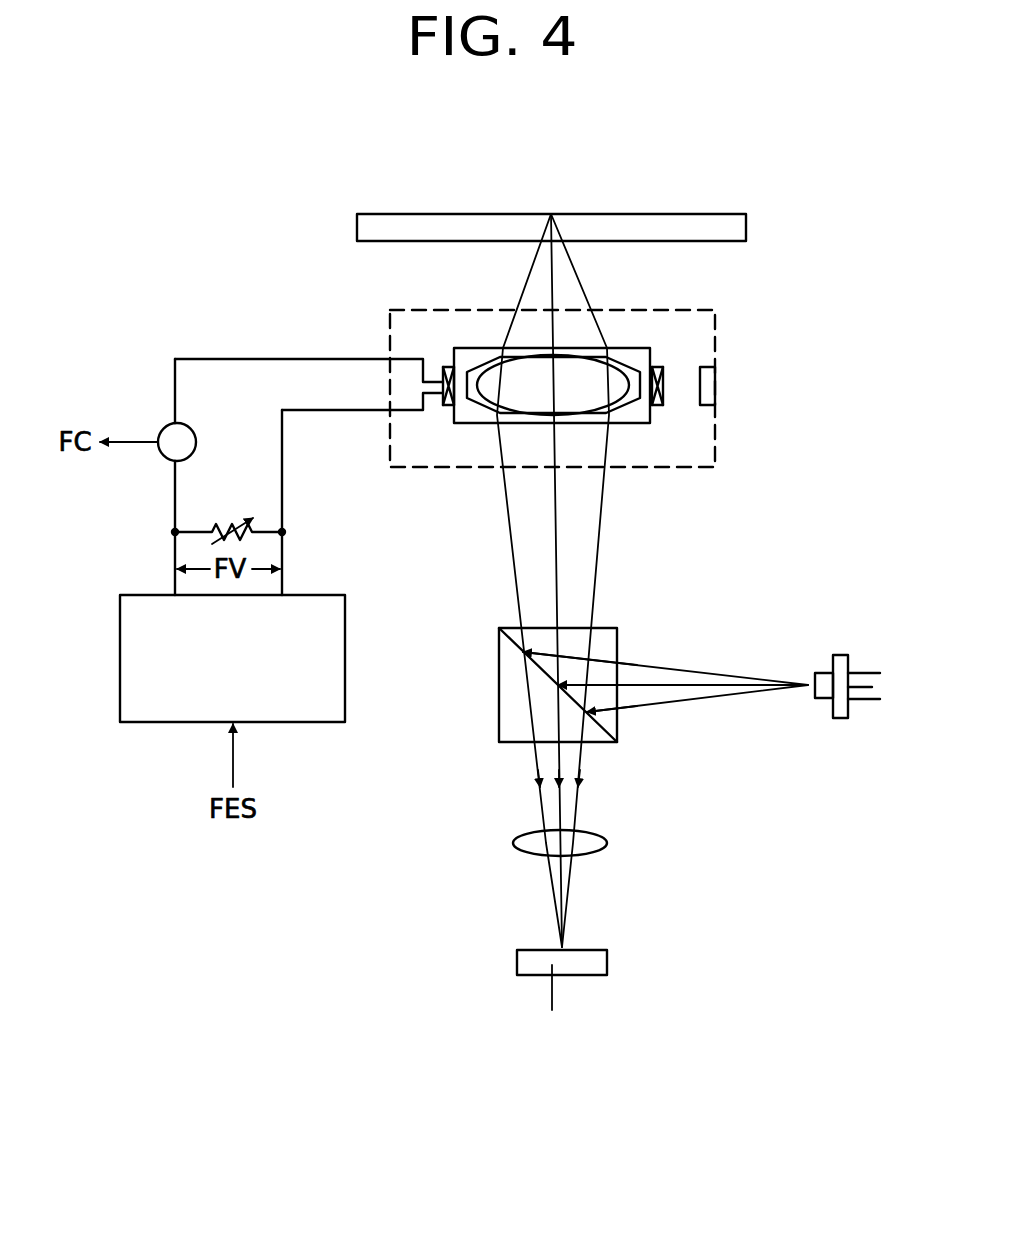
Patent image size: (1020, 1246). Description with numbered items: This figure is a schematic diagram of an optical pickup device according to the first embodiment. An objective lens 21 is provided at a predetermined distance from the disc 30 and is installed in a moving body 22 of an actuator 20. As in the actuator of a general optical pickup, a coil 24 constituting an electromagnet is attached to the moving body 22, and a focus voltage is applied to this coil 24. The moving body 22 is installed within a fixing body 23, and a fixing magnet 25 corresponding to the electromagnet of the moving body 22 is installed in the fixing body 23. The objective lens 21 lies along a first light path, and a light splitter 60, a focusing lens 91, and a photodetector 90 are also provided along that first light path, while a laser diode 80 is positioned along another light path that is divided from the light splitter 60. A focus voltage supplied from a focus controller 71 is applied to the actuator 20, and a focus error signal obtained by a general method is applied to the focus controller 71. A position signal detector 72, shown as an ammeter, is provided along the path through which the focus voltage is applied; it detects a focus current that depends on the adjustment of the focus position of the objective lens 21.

The actuator 20 is at (737, 437).
The objective lens 21 is at (655, 367).
The moving body 22 is at (633, 347).
The fixing body 23 is at (715, 317).
The coil 24 is at (657, 408).
The fixing magnet 25 is at (708, 387).
The optical disk 30 is at (711, 209).
The light splitter 60 is at (617, 638).
The focus controller 71 is at (120, 603).
The position signal detector 72 is at (167, 424).
The laser diode 80 is at (843, 655).
The photodetector 90 is at (607, 963).
The condenser lens 91 is at (607, 843).